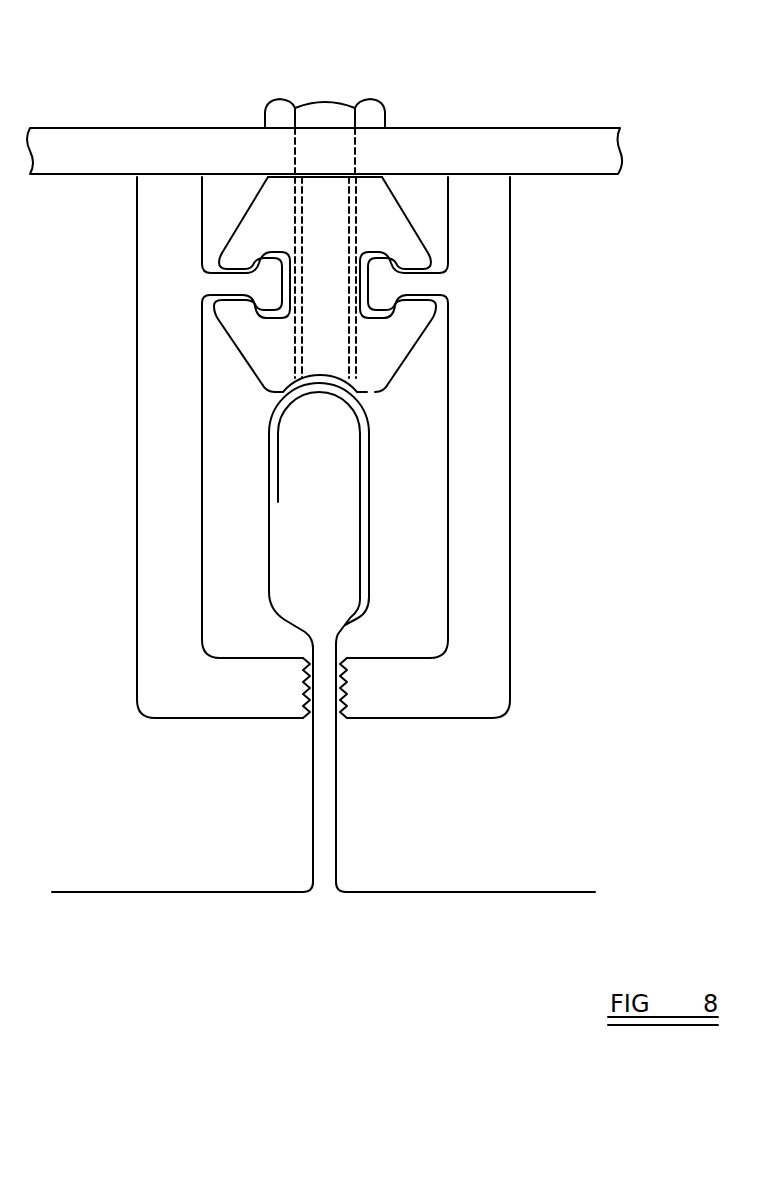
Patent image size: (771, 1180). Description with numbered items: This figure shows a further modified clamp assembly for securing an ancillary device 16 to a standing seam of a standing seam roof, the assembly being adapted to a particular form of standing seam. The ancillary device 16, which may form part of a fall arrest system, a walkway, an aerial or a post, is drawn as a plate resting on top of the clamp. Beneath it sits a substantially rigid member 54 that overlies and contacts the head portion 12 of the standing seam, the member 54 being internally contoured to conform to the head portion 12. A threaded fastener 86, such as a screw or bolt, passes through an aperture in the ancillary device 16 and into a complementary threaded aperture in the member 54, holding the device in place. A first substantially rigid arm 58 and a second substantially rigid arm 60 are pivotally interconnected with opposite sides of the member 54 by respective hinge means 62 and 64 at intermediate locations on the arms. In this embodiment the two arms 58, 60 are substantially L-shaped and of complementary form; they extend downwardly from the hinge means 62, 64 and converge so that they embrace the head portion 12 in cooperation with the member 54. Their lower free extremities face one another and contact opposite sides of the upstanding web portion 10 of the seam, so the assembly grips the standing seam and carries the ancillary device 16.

The web portion 10 is at (337, 790).
The head portion 12 is at (369, 540).
The ancillary device 16 is at (530, 128).
The substantially rigid member 54 is at (403, 218).
The first substantially rigid arm 58 is at (137, 466).
The second substantially rigid arm 60 is at (510, 496).
The hinge means 62 is at (243, 264).
The hinge means 64 is at (408, 267).
The threaded fastener 86 is at (328, 106).